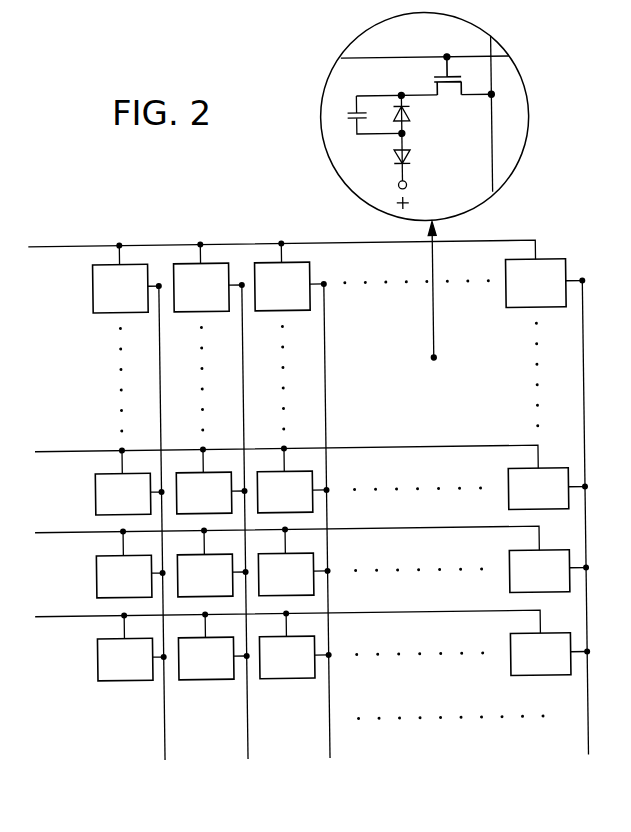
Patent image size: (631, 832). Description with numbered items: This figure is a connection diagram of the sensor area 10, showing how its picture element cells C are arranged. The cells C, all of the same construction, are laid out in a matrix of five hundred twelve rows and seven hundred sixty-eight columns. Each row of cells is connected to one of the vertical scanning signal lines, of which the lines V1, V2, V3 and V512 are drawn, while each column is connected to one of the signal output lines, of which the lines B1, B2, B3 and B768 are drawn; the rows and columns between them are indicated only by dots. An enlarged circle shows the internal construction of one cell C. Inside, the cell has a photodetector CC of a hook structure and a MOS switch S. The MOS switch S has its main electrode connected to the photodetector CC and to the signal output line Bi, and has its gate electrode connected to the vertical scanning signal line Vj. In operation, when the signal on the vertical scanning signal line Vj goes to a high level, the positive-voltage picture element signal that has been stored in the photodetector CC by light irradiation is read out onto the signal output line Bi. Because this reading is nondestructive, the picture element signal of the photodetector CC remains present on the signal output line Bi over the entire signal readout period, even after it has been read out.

The sensor area 10 is at (316, 822).
The vertical scanning signal line V512 is at (282, 238).
The vertical scanning signal line V3 is at (286, 446).
The vertical scanning signal line V2 is at (287, 528).
The vertical scanning signal line V1 is at (288, 611).
The signal output line B1 is at (179, 524).
The signal output line B2 is at (261, 523).
The signal output line B3 is at (343, 522).
The signal output line B768 is at (555, 519).
The vertical scanning signal line Vj is at (425, 44).
The signal output line Bi is at (501, 113).
The MOS switch S is at (452, 87).
The photodetector CC is at (409, 136).
The picture element cell C is at (521, 67).